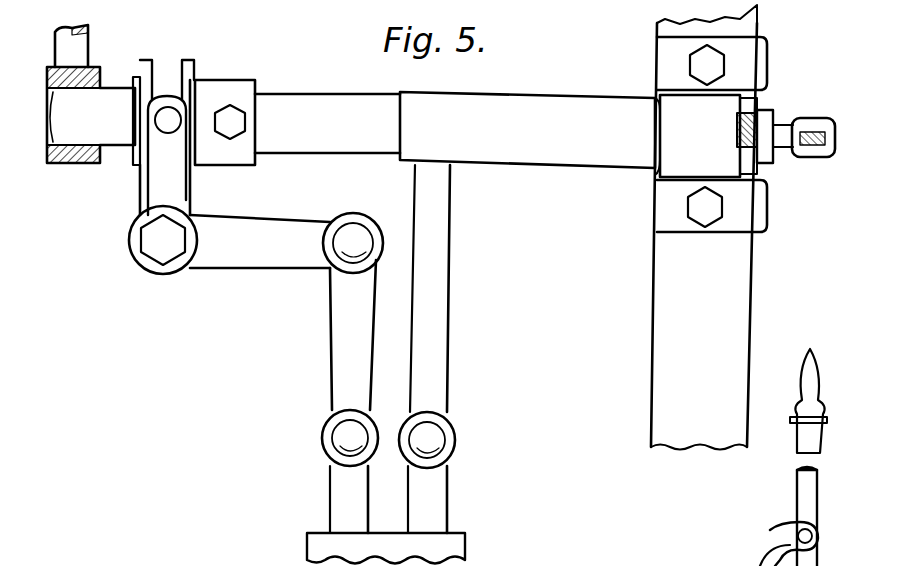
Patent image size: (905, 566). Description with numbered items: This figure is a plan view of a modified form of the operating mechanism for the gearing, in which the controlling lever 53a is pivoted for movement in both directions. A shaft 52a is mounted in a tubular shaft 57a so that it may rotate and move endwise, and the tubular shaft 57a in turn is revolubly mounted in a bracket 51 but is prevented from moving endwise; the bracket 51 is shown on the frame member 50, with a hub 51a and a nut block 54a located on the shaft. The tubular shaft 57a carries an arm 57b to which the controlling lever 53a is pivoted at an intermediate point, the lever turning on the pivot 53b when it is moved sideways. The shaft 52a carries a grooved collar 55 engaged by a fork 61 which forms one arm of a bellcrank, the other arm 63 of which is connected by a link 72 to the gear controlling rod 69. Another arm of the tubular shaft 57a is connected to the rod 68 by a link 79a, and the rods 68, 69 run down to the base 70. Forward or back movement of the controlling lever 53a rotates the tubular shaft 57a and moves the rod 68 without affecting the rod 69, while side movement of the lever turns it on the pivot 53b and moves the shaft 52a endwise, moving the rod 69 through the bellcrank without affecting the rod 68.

The frame beam 50 is at (709, 227).
The bracket 51 is at (697, 136).
The flanged hub 51a is at (136, 51).
The shaft 52a is at (341, 183).
The controlling lever 53a is at (798, 497).
The pivot 53b is at (773, 533).
The nut block 54a is at (270, 53).
The grooved collar 55 is at (167, 68).
The tubular shaft 57a is at (556, 133).
The arm 57b is at (760, 150).
The fork 61 is at (190, 190).
The arm 63 is at (243, 256).
The rod 68 is at (437, 503).
The gear controlling rod 69 is at (330, 505).
The base 70 is at (458, 552).
The link 72 is at (334, 348).
The link 79a is at (514, 316).